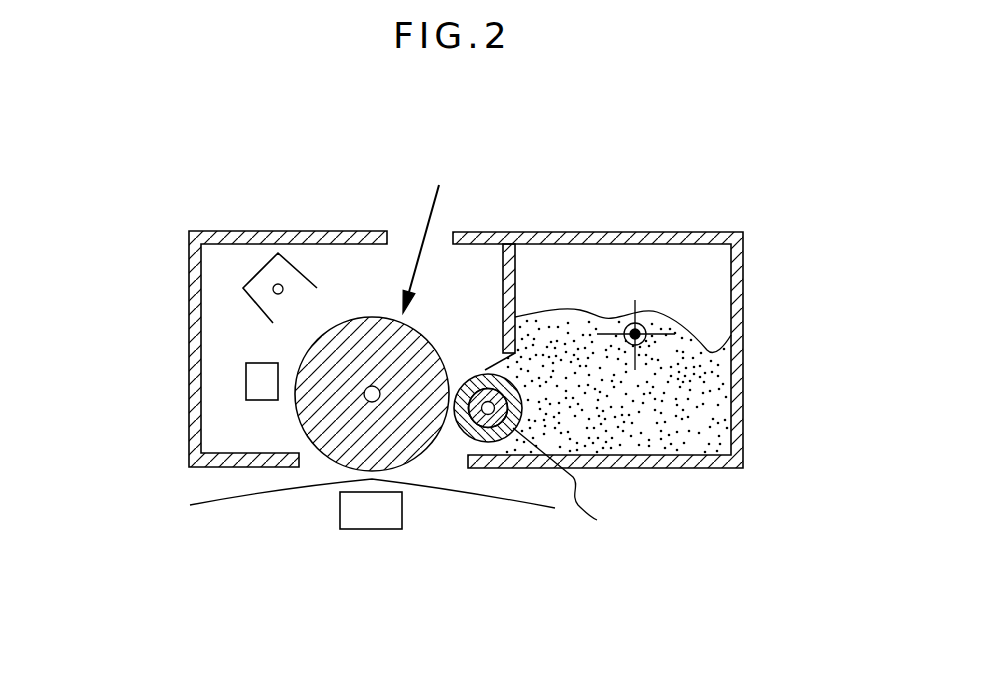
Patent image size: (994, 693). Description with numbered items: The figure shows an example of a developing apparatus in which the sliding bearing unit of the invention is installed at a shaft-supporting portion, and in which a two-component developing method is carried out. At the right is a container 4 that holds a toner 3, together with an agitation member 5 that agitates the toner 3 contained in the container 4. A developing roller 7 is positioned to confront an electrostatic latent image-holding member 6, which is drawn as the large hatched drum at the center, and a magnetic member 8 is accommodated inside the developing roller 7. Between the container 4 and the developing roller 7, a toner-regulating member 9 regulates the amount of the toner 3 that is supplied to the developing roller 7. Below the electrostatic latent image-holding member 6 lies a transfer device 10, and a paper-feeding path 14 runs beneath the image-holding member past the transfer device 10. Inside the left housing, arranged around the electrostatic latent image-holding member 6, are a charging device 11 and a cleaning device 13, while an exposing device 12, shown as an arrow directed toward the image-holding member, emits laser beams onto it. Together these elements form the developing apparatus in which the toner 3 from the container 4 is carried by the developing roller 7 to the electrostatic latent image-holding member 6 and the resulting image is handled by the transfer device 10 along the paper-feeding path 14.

The toner 3 is at (700, 410).
The container 4 is at (577, 233).
The agitation member 5 is at (640, 322).
The electrostatic latent image-holding member 6 is at (337, 455).
The developing roller 7 is at (460, 432).
The magnetic member 8 is at (567, 488).
The toner-regulating member 9 is at (497, 362).
The transfer device 10 is at (365, 518).
The charging device 11 is at (295, 268).
The exposing device 12 is at (420, 243).
The cleaning device 13 is at (245, 380).
The paper-feeding path 14 is at (200, 502).